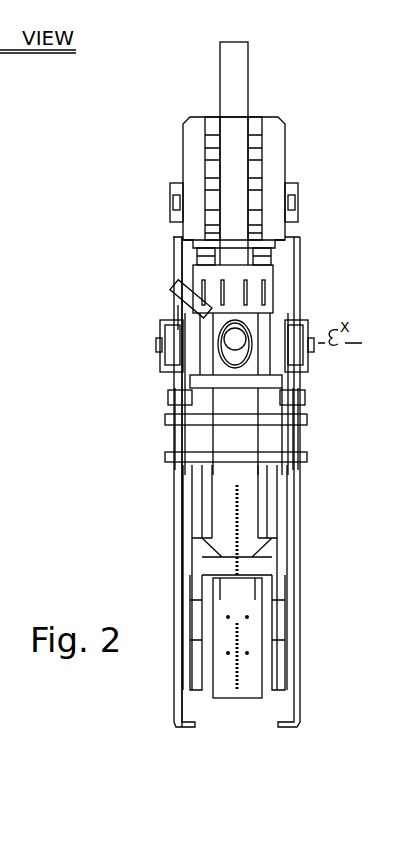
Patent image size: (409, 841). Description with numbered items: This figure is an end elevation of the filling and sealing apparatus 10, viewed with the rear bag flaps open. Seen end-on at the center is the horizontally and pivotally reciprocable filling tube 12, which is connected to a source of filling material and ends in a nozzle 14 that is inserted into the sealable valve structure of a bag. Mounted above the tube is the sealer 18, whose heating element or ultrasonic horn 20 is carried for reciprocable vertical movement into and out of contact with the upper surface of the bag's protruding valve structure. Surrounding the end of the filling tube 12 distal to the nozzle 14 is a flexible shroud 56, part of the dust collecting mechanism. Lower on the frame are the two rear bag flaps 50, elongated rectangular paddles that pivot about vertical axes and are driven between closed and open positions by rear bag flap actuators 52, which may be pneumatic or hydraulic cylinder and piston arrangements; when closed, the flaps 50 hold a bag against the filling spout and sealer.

The filling and sealing apparatus 10 is at (190, 62).
The sealer 18 is at (212, 163).
The ultrasonic horn 20 is at (197, 265).
The filling tube 12 is at (237, 340).
The nozzle 14 is at (287, 390).
The rear bag flap 50 is at (175, 310).
The rear bag flap actuator 52 is at (164, 475).
The flexible shroud 56 is at (255, 335).